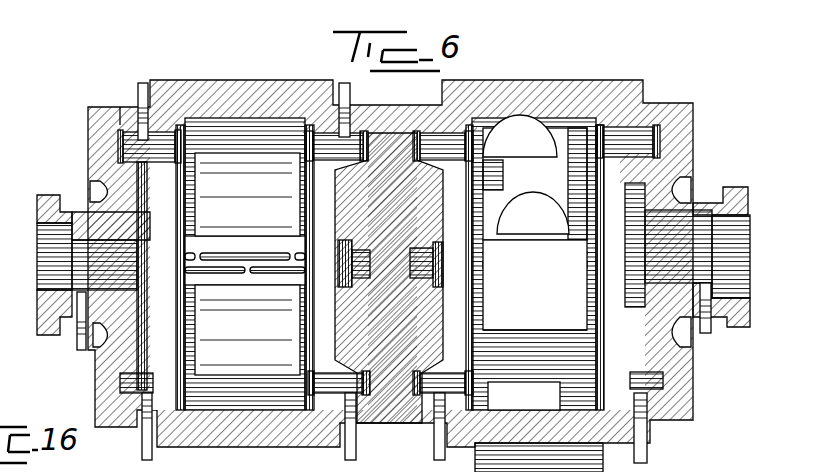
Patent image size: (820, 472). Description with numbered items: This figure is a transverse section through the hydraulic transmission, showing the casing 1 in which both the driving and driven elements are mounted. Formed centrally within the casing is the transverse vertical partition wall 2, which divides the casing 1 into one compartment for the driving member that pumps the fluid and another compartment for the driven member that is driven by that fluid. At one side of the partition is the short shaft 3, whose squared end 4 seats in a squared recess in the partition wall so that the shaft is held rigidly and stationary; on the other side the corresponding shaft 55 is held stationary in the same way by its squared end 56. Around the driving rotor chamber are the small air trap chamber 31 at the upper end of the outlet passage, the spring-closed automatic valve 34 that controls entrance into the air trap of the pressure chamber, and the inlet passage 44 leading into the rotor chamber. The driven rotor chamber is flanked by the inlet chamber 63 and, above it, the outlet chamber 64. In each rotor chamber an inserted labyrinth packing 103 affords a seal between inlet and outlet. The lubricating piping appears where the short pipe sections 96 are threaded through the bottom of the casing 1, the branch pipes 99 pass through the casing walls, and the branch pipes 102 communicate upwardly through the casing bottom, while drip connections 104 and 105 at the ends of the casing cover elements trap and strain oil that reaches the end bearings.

The casing 1 is at (406, 99).
The transverse vertical wall or partition 2 is at (402, 395).
The short shaft 3 is at (443, 249).
The squared end 4 is at (412, 268).
The air trap chamber 31 is at (520, 136).
The automatic valve 34 is at (533, 213).
The inlet passage 44 is at (539, 427).
The shaft 55 is at (338, 257).
The squared end 56 is at (357, 265).
The inlet chamber 63 is at (247, 339).
The outlet chamber 64 is at (247, 194).
The short pipe section 96 is at (438, 445).
The branch pipes 99 is at (137, 95).
The branch pipes 102 is at (148, 455).
The labyrinth packing 103 is at (252, 256).
The drip connection 104 is at (705, 334).
The drip connection 105 is at (83, 350).